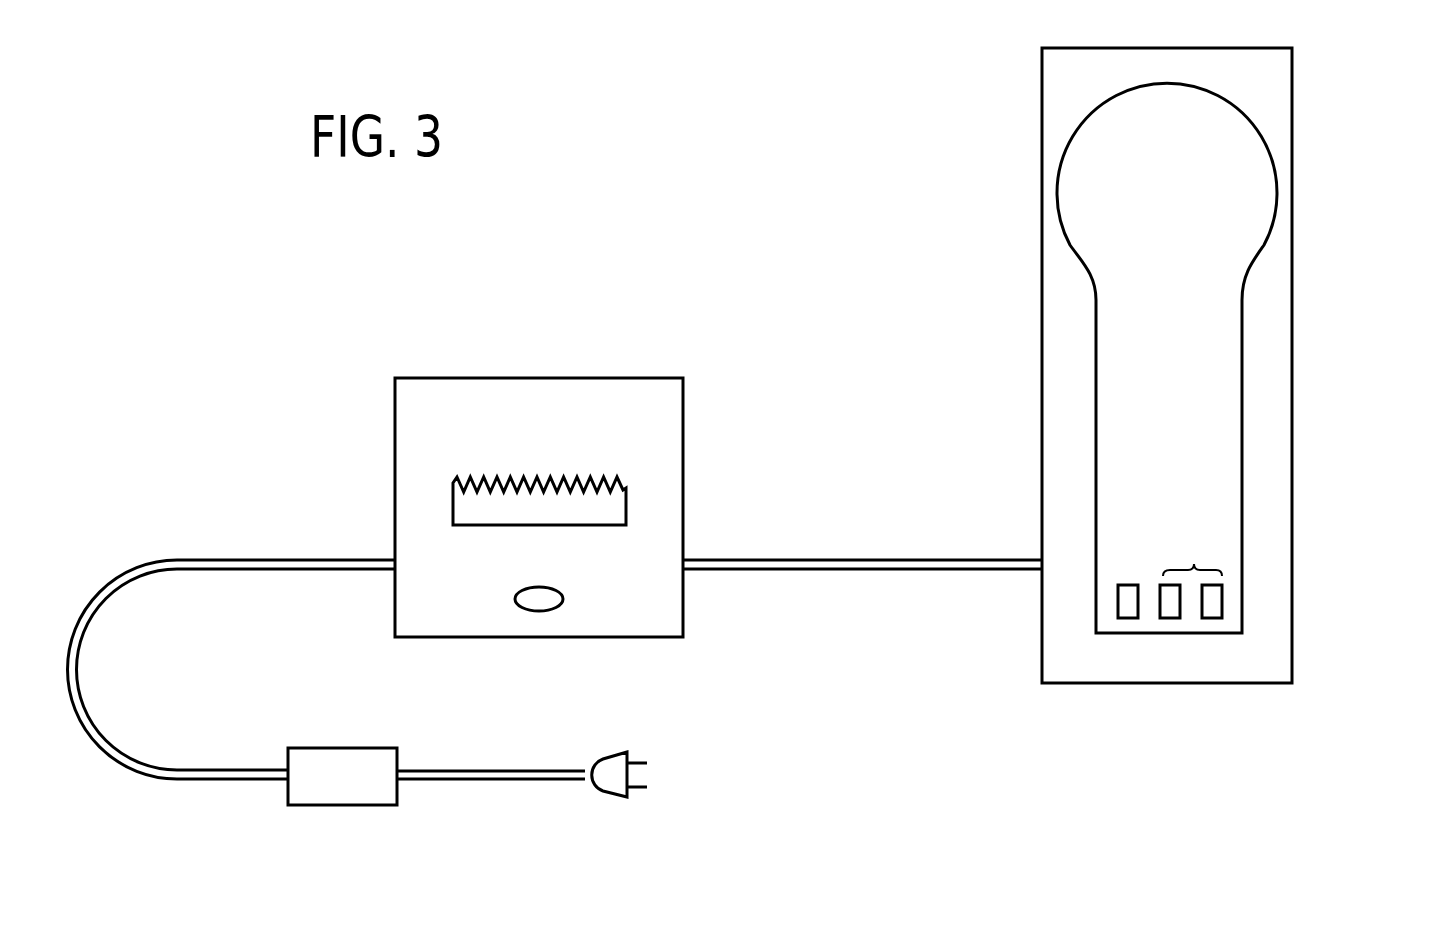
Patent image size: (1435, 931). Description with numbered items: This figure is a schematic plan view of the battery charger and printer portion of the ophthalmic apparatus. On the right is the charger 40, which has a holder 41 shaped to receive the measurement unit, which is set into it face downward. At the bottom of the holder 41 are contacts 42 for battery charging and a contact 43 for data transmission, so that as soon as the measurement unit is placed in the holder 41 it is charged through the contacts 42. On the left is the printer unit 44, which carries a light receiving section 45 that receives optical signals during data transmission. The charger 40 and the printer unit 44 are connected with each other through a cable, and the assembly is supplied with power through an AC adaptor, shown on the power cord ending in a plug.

The charger 40 is at (1013, 156).
The holder 41 is at (1097, 395).
The contacts 42 is at (1195, 557).
The contact 43 is at (1127, 604).
The printer unit 44 is at (537, 378).
The light receiving section 45 is at (538, 603).